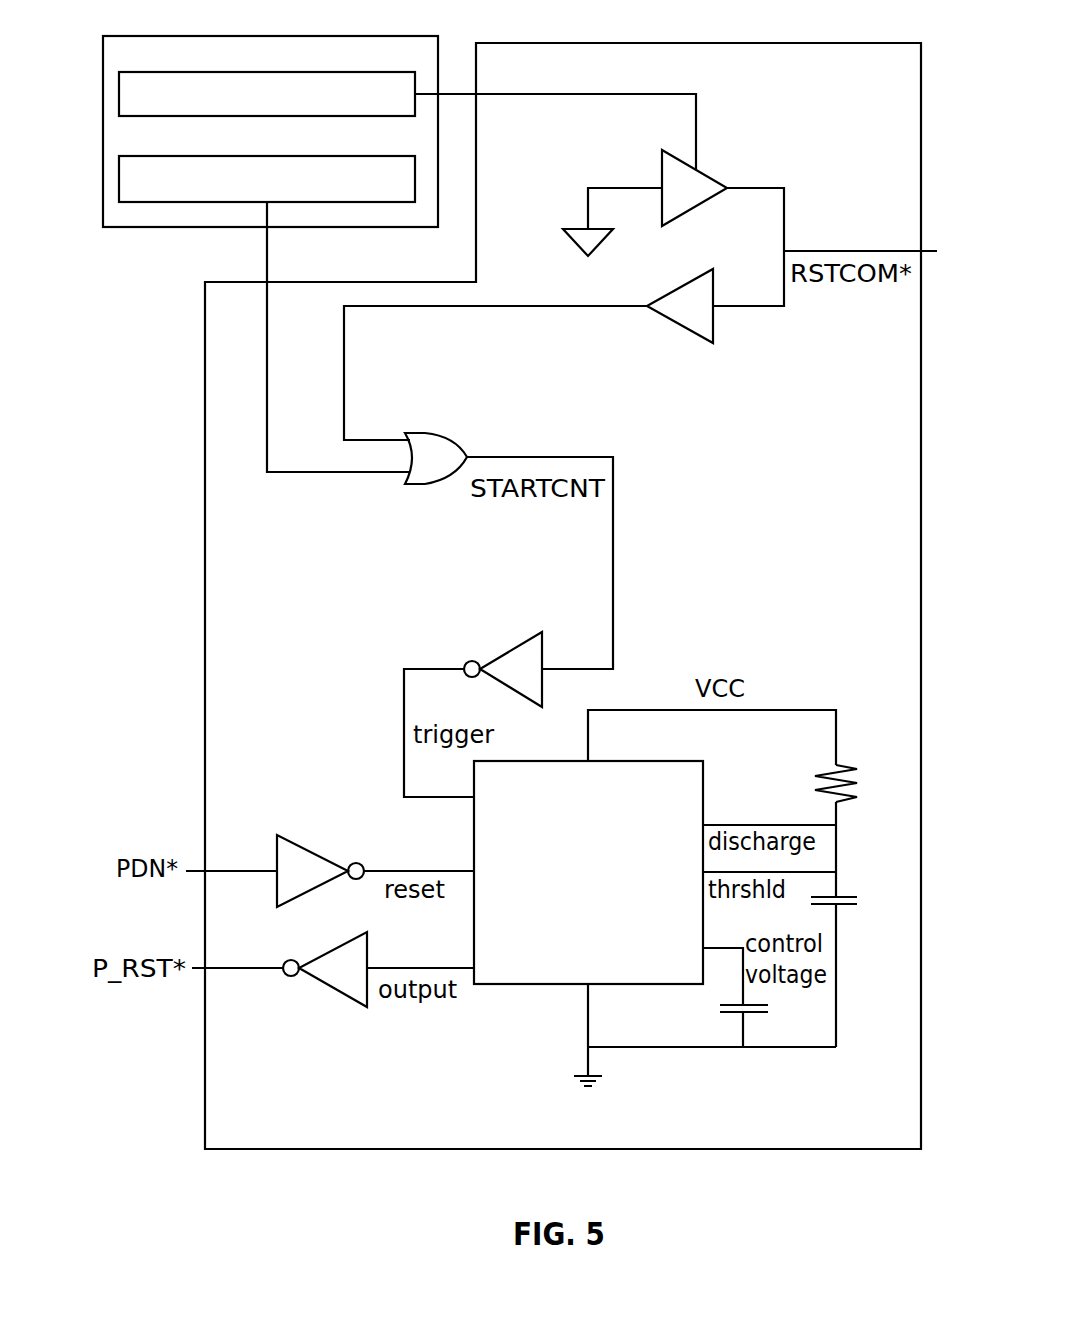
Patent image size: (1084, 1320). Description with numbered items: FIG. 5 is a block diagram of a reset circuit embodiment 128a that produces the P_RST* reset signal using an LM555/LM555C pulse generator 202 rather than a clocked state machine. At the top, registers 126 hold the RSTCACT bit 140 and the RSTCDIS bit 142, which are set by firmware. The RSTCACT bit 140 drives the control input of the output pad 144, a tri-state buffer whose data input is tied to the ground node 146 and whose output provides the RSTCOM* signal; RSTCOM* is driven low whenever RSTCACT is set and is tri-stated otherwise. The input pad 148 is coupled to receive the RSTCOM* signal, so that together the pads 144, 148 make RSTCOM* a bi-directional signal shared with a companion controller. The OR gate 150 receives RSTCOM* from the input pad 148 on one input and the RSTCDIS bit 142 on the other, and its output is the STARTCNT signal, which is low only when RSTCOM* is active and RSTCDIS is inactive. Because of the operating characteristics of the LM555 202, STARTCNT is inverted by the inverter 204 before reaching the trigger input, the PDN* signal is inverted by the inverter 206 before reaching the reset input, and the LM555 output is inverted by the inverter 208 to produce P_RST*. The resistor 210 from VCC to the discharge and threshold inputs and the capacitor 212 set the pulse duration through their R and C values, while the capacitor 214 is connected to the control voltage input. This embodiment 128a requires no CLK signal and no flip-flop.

The registers 126 is at (178, 36).
The RSTCACT bit 140 is at (403, 106).
The RSTCDIS bit 142 is at (388, 192).
The reset circuit embodiment 128a is at (875, 81).
The output pad 144 is at (716, 176).
The ground node 146 is at (575, 248).
The input pad 148 is at (690, 333).
The OR gate 150 is at (417, 432).
The inverter 204 is at (513, 645).
The LM555/LM555C pulse generator 202 is at (608, 889).
The inverter 206 is at (303, 846).
The inverter 208 is at (340, 995).
The resistor 210 is at (860, 794).
The capacitor 212 is at (861, 914).
The capacitor 214 is at (718, 1010).